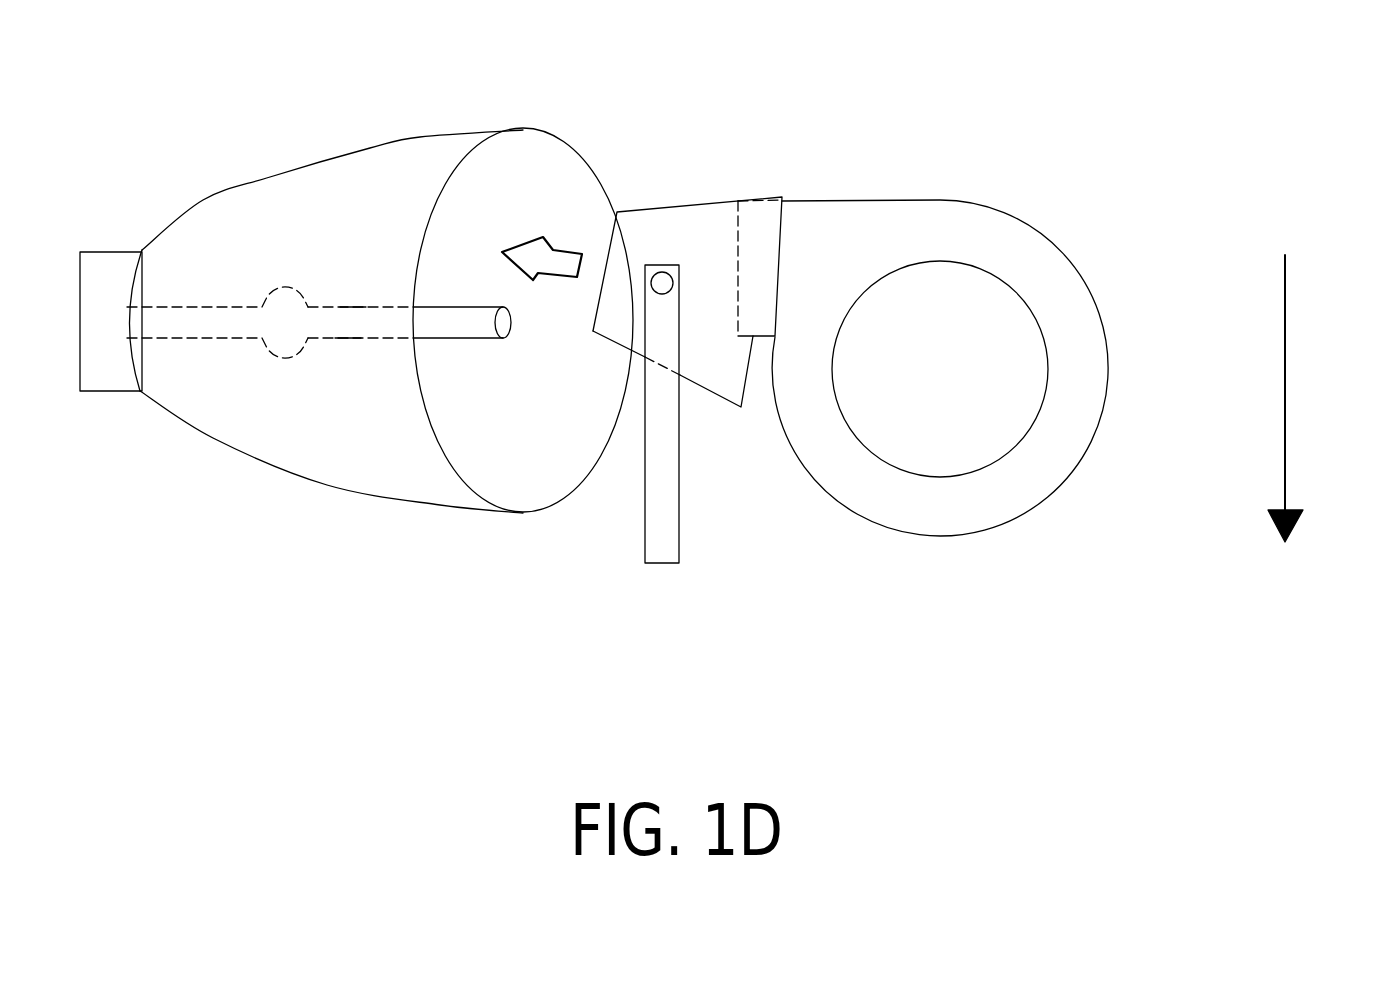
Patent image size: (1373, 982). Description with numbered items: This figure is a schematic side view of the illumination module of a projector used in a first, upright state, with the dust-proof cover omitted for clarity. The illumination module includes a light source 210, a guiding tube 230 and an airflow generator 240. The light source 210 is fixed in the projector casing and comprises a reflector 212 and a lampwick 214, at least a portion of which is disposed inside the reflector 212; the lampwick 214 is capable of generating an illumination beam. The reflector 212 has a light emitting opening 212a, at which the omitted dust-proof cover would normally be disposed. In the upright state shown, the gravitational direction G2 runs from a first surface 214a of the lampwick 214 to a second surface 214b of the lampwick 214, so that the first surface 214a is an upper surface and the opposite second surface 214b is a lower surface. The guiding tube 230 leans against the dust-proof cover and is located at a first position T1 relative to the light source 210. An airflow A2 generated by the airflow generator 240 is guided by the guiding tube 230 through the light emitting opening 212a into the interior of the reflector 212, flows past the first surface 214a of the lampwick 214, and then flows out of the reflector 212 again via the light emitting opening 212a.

The light source 210 is at (344, 345).
The reflector 212 is at (381, 368).
The light emitting opening 212a is at (493, 503).
The lampwick 214 is at (319, 329).
The first surface 214a is at (353, 307).
The second surface 214b is at (348, 342).
The guiding tube 230 is at (712, 217).
The airflow generator 240 is at (1030, 242).
The airflow A2 is at (556, 250).
The first position T1 is at (856, 309).
The gravitational direction G2 is at (1288, 373).